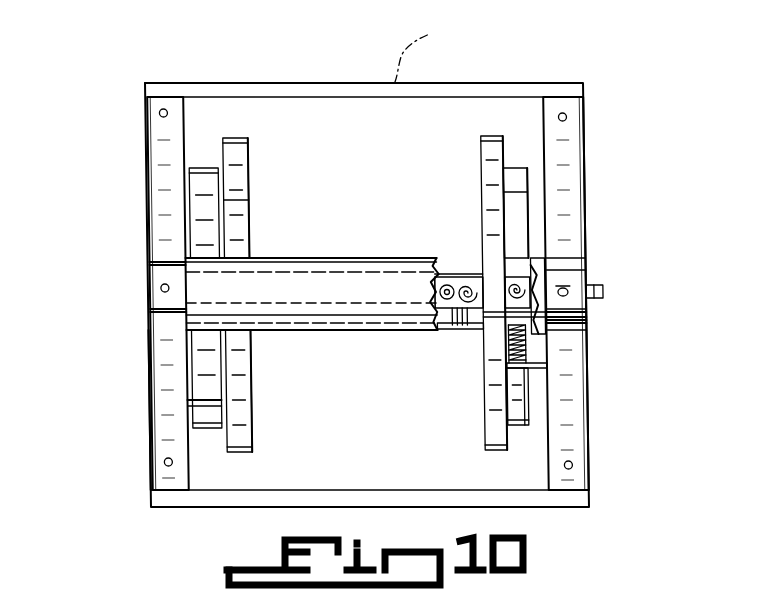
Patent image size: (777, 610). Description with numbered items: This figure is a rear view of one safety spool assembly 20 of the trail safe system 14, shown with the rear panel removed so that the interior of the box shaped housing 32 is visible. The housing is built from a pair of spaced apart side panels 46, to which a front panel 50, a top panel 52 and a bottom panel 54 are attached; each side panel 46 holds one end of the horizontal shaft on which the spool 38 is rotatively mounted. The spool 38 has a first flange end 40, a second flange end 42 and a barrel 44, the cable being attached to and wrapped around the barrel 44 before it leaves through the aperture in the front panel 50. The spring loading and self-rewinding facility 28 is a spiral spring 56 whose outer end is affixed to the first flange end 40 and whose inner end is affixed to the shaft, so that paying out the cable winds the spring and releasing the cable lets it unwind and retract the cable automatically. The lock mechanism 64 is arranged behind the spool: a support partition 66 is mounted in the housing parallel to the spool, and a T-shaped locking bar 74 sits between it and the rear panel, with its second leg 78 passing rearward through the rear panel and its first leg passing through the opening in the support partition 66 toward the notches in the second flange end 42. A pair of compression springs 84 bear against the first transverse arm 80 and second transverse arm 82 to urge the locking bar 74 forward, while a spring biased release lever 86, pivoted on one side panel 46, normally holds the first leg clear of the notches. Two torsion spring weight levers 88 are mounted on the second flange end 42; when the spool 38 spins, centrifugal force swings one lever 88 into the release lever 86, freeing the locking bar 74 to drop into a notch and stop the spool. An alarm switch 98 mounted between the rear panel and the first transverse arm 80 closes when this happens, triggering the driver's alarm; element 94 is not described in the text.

The trail safe system 14 is at (650, 131).
The safety spool assembly 20 is at (141, 143).
The spring loading and self-rewinding facility 28 is at (202, 167).
The box shaped housing 32 is at (139, 368).
The spool 38 is at (249, 163).
The first flange end 40 is at (243, 198).
The second flange end 42 is at (485, 175).
The barrel 44 is at (410, 278).
The side panel 46 is at (151, 200).
The front panel 50 is at (306, 110).
The top panel 52 is at (434, 49).
The bottom panel 54 is at (209, 497).
The spiral spring 56 is at (199, 398).
The lock mechanism 64 is at (459, 330).
The support partition 66 is at (289, 295).
The T-shaped locking bar 74 is at (446, 323).
The second leg 78 is at (490, 290).
The first transverse arm 80 is at (455, 280).
The second transverse arm 82 is at (541, 259).
The compression spring 84 is at (580, 310).
The spring biased release lever 86 is at (522, 333).
The torsion spring weight lever 88 is at (513, 177).
The shaft 94 is at (600, 290).
The alarm switch 98 is at (444, 275).